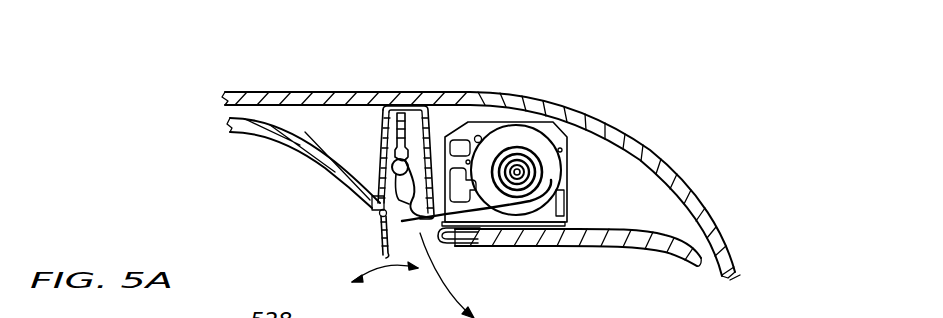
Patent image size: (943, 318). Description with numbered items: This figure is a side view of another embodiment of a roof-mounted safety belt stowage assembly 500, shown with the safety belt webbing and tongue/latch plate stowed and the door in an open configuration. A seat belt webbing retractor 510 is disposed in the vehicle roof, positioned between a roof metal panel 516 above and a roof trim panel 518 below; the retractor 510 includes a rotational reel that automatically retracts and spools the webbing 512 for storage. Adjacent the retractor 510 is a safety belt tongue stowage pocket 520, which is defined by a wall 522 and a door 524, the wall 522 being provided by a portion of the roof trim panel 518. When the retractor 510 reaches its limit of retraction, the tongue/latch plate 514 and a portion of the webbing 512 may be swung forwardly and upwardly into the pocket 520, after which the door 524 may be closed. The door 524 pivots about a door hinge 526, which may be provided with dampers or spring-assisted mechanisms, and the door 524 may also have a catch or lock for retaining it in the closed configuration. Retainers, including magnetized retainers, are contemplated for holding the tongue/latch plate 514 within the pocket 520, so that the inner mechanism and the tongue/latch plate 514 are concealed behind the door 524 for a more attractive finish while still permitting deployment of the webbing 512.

The roof-mounted assembly 500 is at (673, 110).
The retractor 510 is at (551, 135).
The webbing 512 is at (478, 240).
The tongue/latch plate 514 is at (397, 131).
The roof metal panel 516 is at (305, 92).
The roof trim panel 518 is at (297, 140).
The pocket 520 is at (400, 82).
The wall 522 is at (387, 140).
The door 524 is at (372, 237).
The door hinge 526 is at (376, 216).